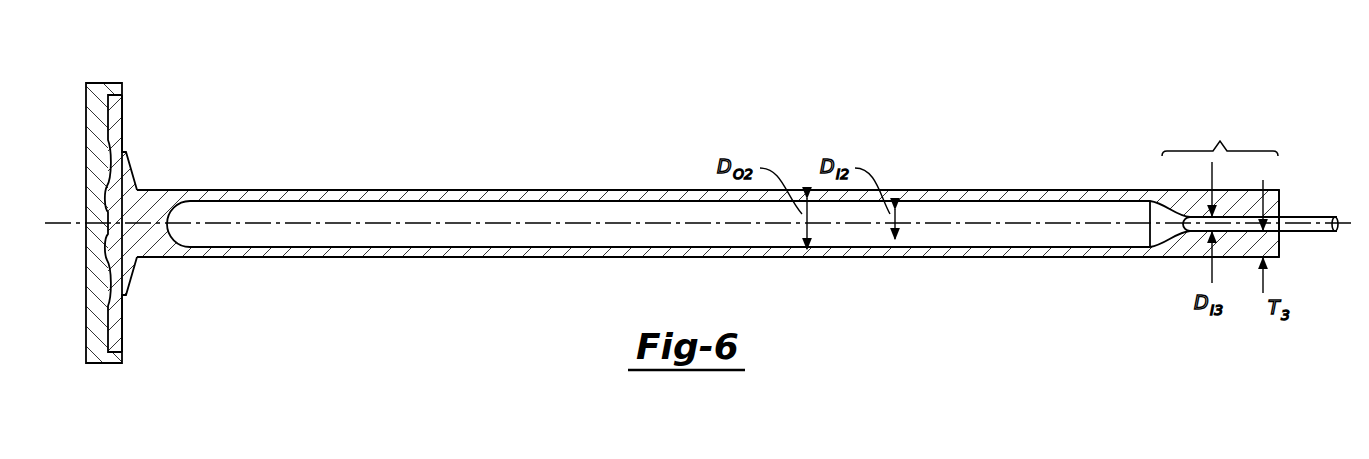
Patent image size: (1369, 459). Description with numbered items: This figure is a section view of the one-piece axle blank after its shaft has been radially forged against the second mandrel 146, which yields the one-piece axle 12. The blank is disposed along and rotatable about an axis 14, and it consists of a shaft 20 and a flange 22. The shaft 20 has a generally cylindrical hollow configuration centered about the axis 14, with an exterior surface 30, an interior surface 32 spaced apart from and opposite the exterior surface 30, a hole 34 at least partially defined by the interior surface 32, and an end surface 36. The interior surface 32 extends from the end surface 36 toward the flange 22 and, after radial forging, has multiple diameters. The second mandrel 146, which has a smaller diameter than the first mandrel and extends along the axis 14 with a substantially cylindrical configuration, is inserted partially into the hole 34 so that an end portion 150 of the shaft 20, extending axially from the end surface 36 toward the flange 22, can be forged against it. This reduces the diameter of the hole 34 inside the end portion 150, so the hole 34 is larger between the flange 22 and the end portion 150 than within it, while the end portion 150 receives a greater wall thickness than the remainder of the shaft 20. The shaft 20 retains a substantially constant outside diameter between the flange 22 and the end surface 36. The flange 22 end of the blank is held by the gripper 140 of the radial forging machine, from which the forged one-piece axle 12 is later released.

The one-piece axle 12 is at (540, 132).
The axis 14 is at (69, 227).
The shaft 20 is at (948, 190).
The flange 22 is at (122, 95).
The exterior surface 30 is at (1047, 258).
The interior surface 32 is at (1018, 247).
The hole 34 is at (1004, 208).
The end surface 36 is at (1280, 198).
The gripper 140 is at (105, 83).
The second mandrel 146 is at (1318, 217).
The end portion 150 is at (1220, 134).